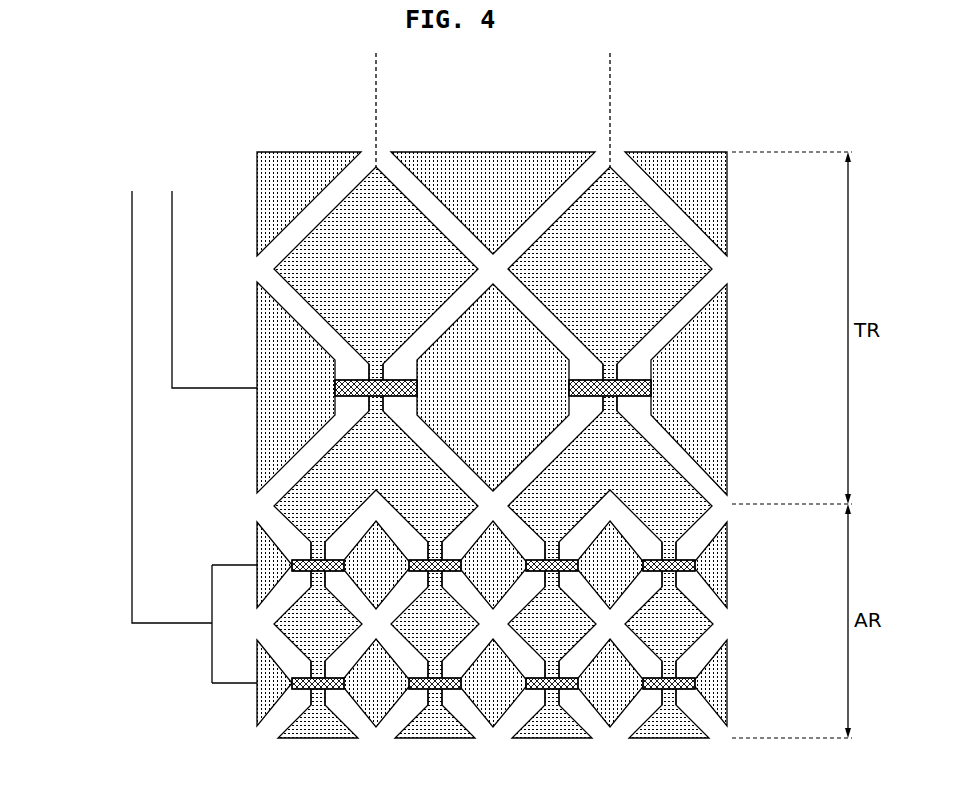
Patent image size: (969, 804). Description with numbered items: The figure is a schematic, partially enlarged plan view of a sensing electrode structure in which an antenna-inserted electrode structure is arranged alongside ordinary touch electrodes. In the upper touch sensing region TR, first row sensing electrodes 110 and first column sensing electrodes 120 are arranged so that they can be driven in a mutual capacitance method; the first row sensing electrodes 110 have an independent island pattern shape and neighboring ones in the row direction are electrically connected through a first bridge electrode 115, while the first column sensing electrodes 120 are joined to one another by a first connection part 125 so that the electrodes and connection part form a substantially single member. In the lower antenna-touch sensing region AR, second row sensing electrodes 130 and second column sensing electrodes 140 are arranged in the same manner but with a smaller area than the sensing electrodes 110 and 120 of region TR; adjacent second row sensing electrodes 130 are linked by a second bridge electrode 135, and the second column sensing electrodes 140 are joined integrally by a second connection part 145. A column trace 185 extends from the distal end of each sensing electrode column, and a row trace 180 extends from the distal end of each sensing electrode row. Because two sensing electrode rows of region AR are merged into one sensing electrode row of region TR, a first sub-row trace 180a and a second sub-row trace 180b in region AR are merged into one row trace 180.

The first row sensing electrode 110 is at (708, 450).
The first bridge electrode 115 is at (655, 392).
The first column sensing electrode 120 is at (682, 257).
The first connection part 125 is at (630, 379).
The second row sensing electrode 130 is at (718, 580).
The second bridge electrode 135 is at (697, 565).
The second column sensing electrode 140 is at (697, 613).
The second connection part 145 is at (674, 667).
The row trace 180 is at (238, 386).
The first sub-row trace 180a is at (240, 563).
The second sub-row trace 180b is at (240, 686).
The column trace 185 is at (376, 92).